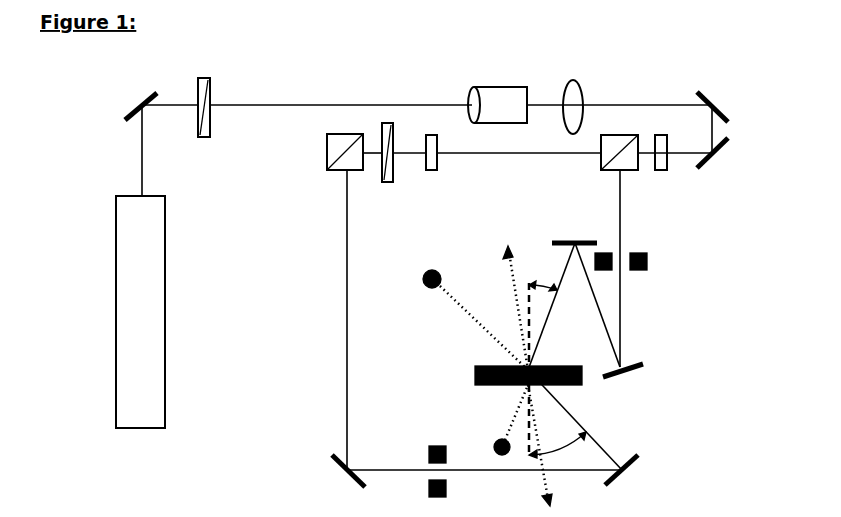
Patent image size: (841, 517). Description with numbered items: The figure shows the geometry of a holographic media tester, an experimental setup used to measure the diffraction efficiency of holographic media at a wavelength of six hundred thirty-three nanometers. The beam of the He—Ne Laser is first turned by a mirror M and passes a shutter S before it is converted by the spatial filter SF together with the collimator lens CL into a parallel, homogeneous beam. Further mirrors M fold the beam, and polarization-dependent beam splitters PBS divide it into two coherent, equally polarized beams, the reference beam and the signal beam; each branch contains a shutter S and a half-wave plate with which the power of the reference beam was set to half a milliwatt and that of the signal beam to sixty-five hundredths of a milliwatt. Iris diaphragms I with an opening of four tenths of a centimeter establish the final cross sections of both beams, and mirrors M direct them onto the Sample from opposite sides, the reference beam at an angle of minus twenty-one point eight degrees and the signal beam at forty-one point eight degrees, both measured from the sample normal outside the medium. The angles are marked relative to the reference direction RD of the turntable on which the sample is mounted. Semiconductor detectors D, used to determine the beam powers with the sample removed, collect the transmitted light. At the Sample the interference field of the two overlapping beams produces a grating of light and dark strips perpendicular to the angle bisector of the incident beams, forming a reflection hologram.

The mirror M is at (426, 291).
The He—Ne laser Laser is at (140, 312).
The shutter S is at (295, 140).
The polarization-dependent beam splitter PBS is at (462, 165).
The spatial filter SF is at (497, 95).
The collimator lens CL is at (581, 101).
The sample Sample is at (491, 375).
The reference direction of the turntable RD is at (509, 297).
The semiconductor detector D is at (464, 362).
The iris diaphragm I is at (543, 375).